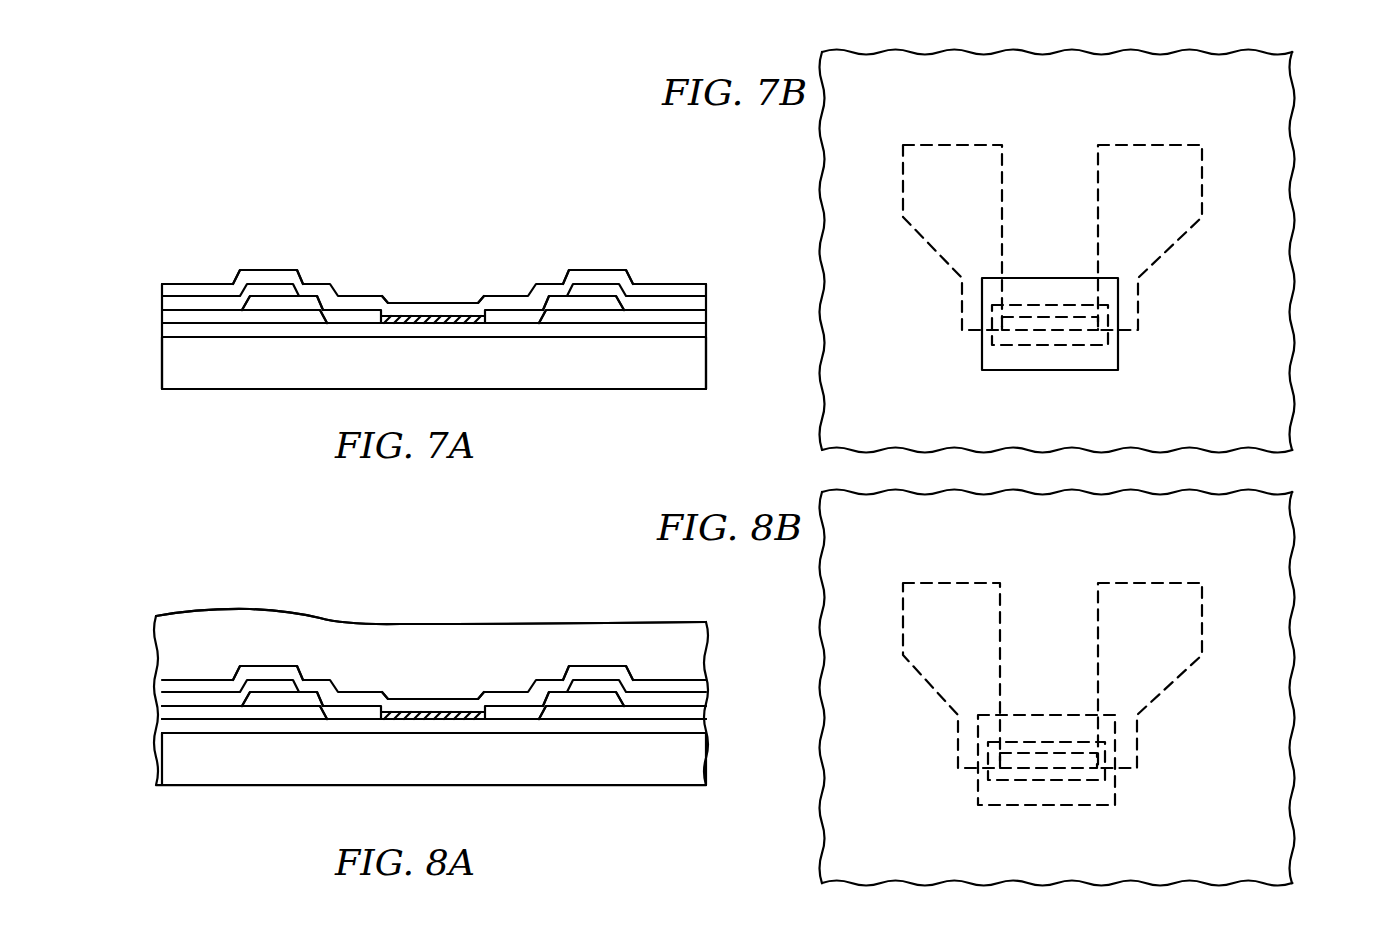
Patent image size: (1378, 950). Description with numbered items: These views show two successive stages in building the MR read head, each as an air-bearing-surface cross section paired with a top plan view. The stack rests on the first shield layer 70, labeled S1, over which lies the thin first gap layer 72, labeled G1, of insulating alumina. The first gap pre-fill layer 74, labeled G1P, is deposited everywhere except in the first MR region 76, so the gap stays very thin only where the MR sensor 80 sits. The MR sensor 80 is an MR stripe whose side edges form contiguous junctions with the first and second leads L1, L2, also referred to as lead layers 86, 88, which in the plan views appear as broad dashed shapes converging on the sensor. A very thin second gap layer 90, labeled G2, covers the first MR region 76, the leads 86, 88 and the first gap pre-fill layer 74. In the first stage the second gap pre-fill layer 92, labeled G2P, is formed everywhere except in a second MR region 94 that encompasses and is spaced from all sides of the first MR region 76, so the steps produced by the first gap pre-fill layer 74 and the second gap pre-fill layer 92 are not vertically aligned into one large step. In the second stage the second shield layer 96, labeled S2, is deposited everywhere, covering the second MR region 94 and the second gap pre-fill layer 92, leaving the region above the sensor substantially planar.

In FIG. 7A, the first shield layer 70 is at (677, 370).
In FIG. 8A, the first shield layer 70 is at (456, 759).
In FIG. 7A, the first gap layer 72 is at (178, 328).
In FIG. 8A, the first gap layer 72 is at (688, 728).
In FIG. 7A, the first gap pre-fill layer 74 is at (238, 318).
In FIG. 8A, the first gap pre-fill layer 74 is at (176, 712).
In FIG. 7B, the first MR region 76 is at (1032, 330).
In FIG. 8B, the first MR region 76 is at (1048, 760).
In FIG. 7A, the MR sensor 80 is at (452, 317).
In FIG. 8A, the MR sensor 80 is at (452, 716).
In FIG. 7B, the MR sensor 80 is at (1063, 323).
In FIG. 8B, the MR sensor 80 is at (1058, 758).
In FIG. 7A, the first lead layer 86 is at (318, 305).
In FIG. 8A, the first lead layer 86 is at (322, 700).
In FIG. 7B, the first lead layer 86 is at (957, 167).
In FIG. 8B, the first lead layer 86 is at (957, 607).
In FIG. 7A, the second lead layer 88 is at (555, 305).
In FIG. 8A, the second lead layer 88 is at (556, 700).
In FIG. 7B, the second lead layer 88 is at (1155, 168).
In FIG. 8B, the second lead layer 88 is at (1155, 608).
In FIG. 7A, the second gap layer 90 is at (410, 302).
In FIG. 8A, the second gap layer 90 is at (455, 714).
In FIG. 7A, the second gap pre-fill layer 92 is at (272, 276).
In FIG. 8A, the second gap pre-fill layer 92 is at (270, 674).
In FIG. 7B, the second gap pre-fill layer 92 is at (1262, 105).
In FIG. 7B, the second MR region 94 is at (1035, 283).
In FIG. 8B, the second MR region 94 is at (1033, 803).
In FIG. 8A, the second shield layer 96 is at (190, 632).
In FIG. 8B, the second shield layer 96 is at (1262, 545).
In FIG. 7A, the first lead L1 is at (297, 302).
In FIG. 8A, the first lead L1 is at (285, 698).
In FIG. 7B, the first lead L1 is at (953, 204).
In FIG. 8B, the first lead L1 is at (953, 639).
In FIG. 7A, the second lead L2 is at (573, 302).
In FIG. 8A, the second lead L2 is at (578, 698).
In FIG. 7B, the second lead L2 is at (1145, 204).
In FIG. 8B, the second lead L2 is at (1145, 639).
In FIG. 7A, the first gap layer G1 is at (677, 332).
In FIG. 7A, the second gap layer G2 is at (680, 303).
In FIG. 7A, the first gap pre-fill layer G1P is at (172, 318).
In FIG. 7A, the second gap pre-fill layer G2P is at (185, 292).
In FIG. 7B, the second gap pre-fill layer G2P is at (1243, 407).
In FIG. 7A, the first shield layer S1 is at (430, 377).
In FIG. 8A, the first shield layer S1 is at (430, 769).
In FIG. 8A, the second shield layer S2 is at (430, 654).
In FIG. 8B, the second shield layer S2 is at (1240, 849).